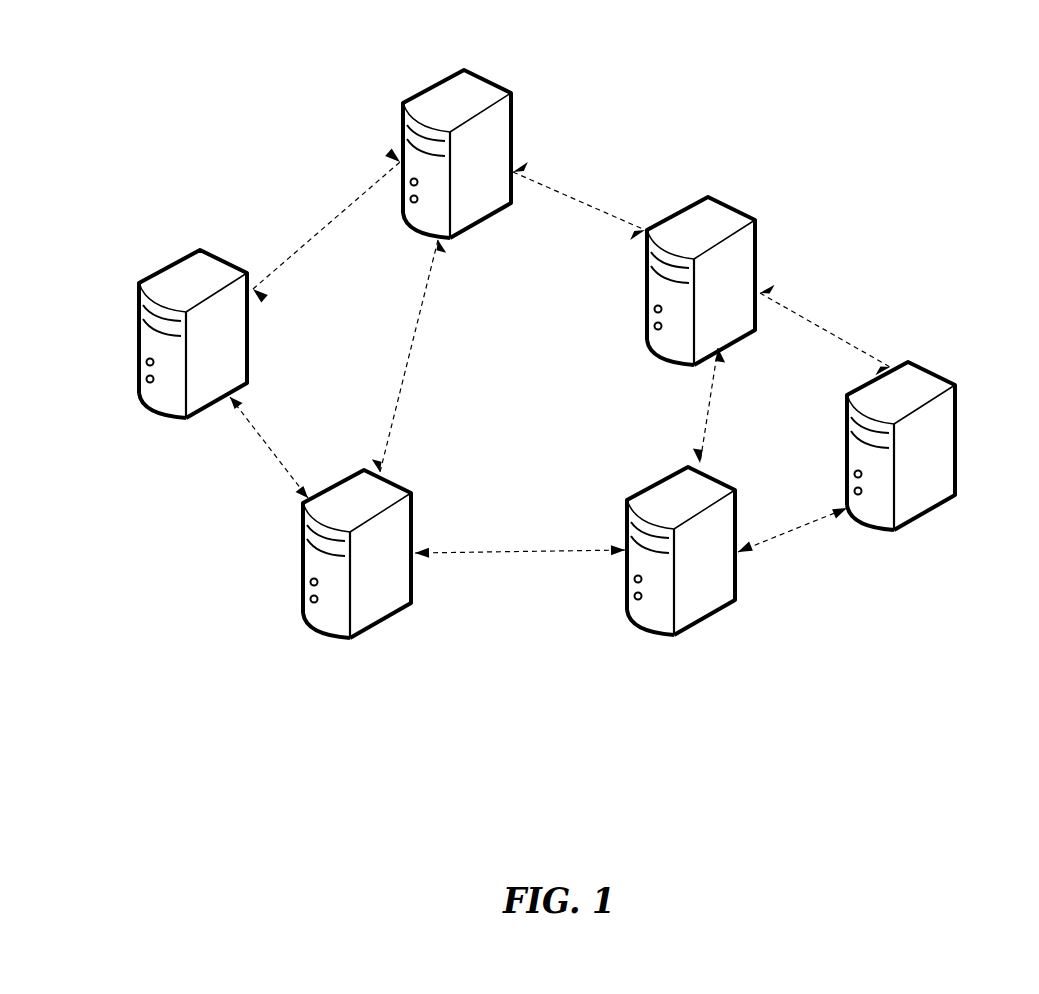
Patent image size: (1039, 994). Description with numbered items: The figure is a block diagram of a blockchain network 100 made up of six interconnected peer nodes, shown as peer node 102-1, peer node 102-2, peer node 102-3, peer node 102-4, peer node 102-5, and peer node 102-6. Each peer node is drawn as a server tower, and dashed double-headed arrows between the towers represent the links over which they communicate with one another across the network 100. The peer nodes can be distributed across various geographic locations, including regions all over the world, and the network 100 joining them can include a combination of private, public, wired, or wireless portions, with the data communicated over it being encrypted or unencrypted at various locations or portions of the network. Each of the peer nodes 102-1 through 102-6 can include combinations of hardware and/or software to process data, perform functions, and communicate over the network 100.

The network 100 is at (570, 355).
The peer node 102-1 is at (174, 258).
The peer node 102-2 is at (490, 220).
The peer node 102-3 is at (365, 630).
The peer node 102-4 is at (702, 193).
The peer node 102-5 is at (698, 623).
The peer node 102-6 is at (908, 358).